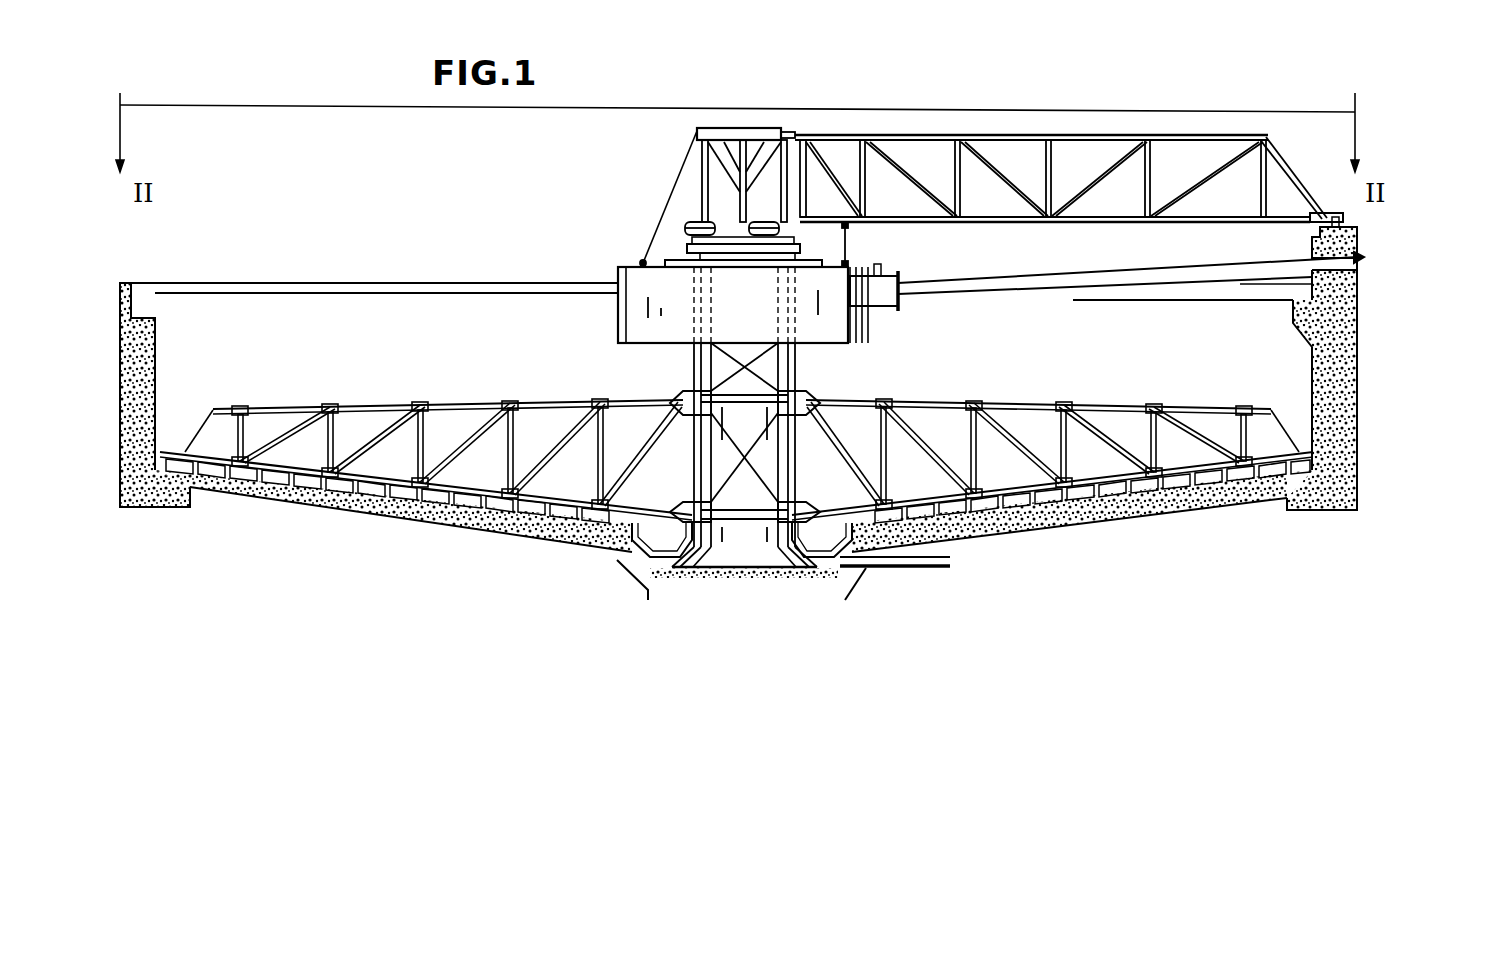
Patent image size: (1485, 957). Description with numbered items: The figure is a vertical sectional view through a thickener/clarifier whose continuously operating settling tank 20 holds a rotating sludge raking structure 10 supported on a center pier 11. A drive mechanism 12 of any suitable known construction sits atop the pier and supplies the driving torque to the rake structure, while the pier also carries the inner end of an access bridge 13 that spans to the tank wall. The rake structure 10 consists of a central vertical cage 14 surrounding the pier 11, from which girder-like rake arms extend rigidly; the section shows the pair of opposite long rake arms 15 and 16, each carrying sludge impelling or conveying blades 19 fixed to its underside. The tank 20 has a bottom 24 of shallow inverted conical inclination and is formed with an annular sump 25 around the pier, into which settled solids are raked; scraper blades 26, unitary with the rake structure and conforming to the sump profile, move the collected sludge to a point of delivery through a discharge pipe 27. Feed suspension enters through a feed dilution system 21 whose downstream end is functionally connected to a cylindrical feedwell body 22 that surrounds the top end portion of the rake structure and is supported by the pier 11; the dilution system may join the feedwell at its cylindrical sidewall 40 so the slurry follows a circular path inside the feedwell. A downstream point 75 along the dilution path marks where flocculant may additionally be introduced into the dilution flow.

The sludge raking structure 10 is at (598, 377).
The center pier 11 is at (757, 432).
The drive mechanism 12 is at (695, 226).
The access bridge 13 is at (980, 222).
The cage 14 is at (690, 352).
The long rake arm 15 is at (380, 406).
The long rake arm 16 is at (1094, 406).
The sludge conveying blades 19 is at (960, 512).
The settling tank 20 is at (1358, 356).
The feed dilution system 21 is at (948, 298).
The feedwell body 22 is at (874, 336).
The tank bottom 24 is at (330, 497).
The annular sump 25 is at (634, 548).
The scraper blades 26 is at (678, 549).
The discharge pipe 27 is at (948, 560).
The feedwell sidewall 40 is at (632, 318).
The flocculant delivery point 75 is at (878, 264).